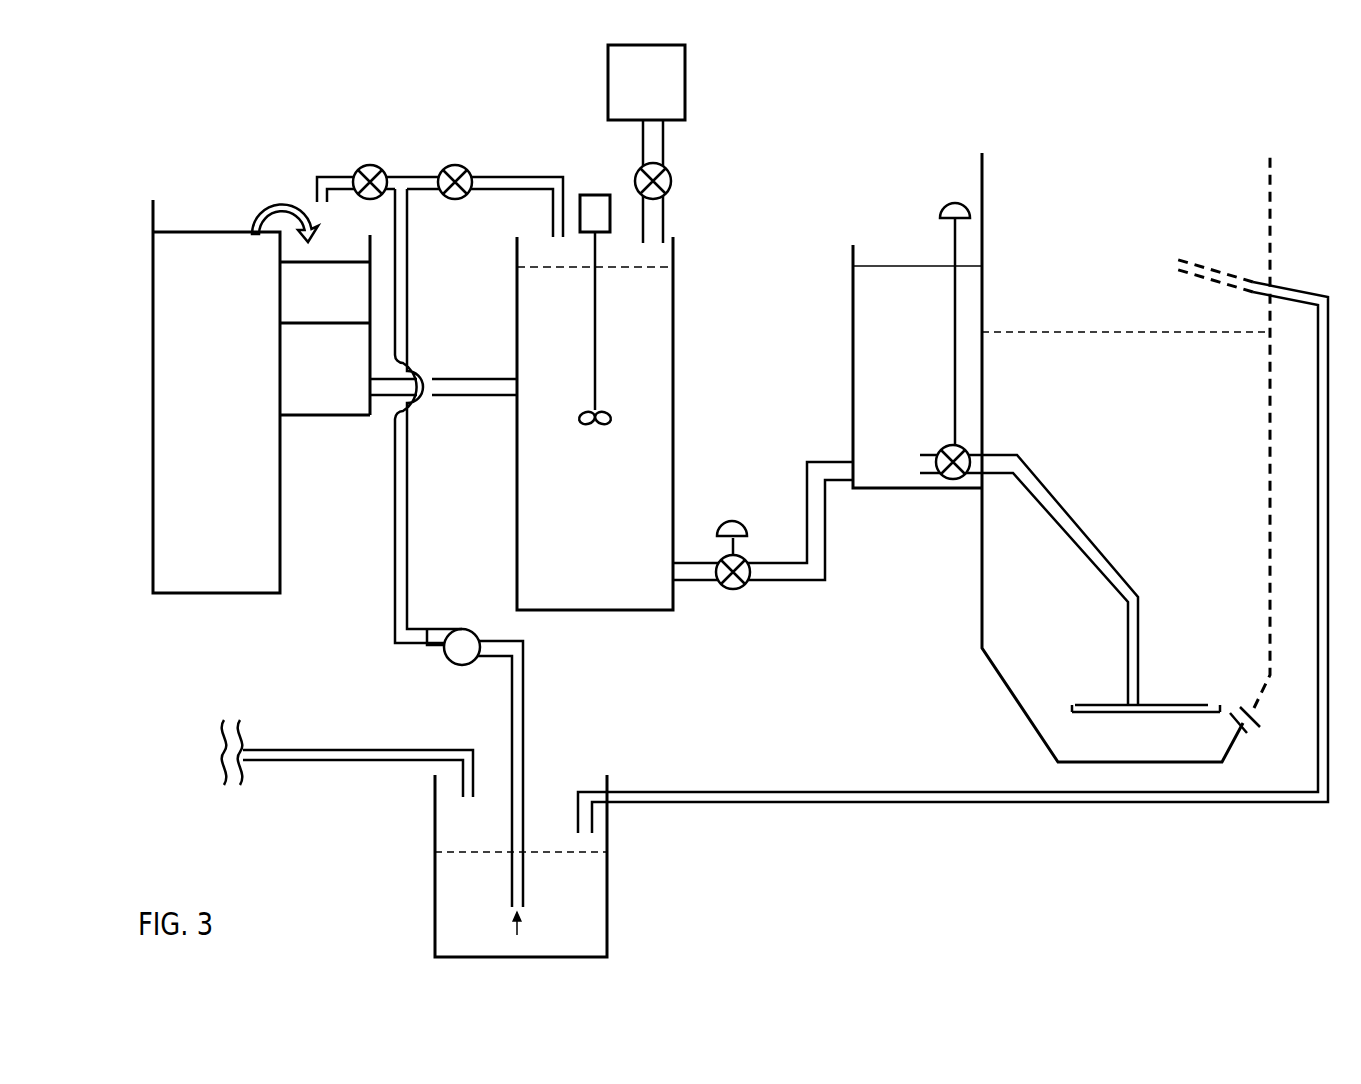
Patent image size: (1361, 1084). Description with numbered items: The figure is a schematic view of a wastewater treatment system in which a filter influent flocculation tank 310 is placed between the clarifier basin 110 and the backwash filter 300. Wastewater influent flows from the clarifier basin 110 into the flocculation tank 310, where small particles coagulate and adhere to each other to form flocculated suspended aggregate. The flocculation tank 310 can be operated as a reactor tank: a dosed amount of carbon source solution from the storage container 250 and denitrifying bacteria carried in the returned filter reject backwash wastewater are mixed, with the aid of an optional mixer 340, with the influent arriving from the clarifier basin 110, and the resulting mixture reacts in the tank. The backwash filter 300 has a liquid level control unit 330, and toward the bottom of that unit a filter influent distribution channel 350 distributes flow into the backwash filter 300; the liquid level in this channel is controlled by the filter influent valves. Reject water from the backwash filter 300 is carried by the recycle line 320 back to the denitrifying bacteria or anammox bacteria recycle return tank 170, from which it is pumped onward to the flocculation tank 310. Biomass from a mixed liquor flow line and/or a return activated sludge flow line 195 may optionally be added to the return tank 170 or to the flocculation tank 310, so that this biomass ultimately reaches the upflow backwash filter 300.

The clarifier basin 110 is at (261, 396).
The recycle return tank 170 is at (431, 831).
The return activated sludge flow line 195 is at (307, 748).
The storage container 250 is at (646, 144).
The backwash filter 300 is at (967, 692).
The filter influent flocculation tank 310 is at (595, 423).
The recycle line 320 is at (392, 599).
The liquid level control unit 330 is at (852, 380).
The mixer 340 is at (607, 332).
The filter influent distribution channel 350 is at (918, 466).